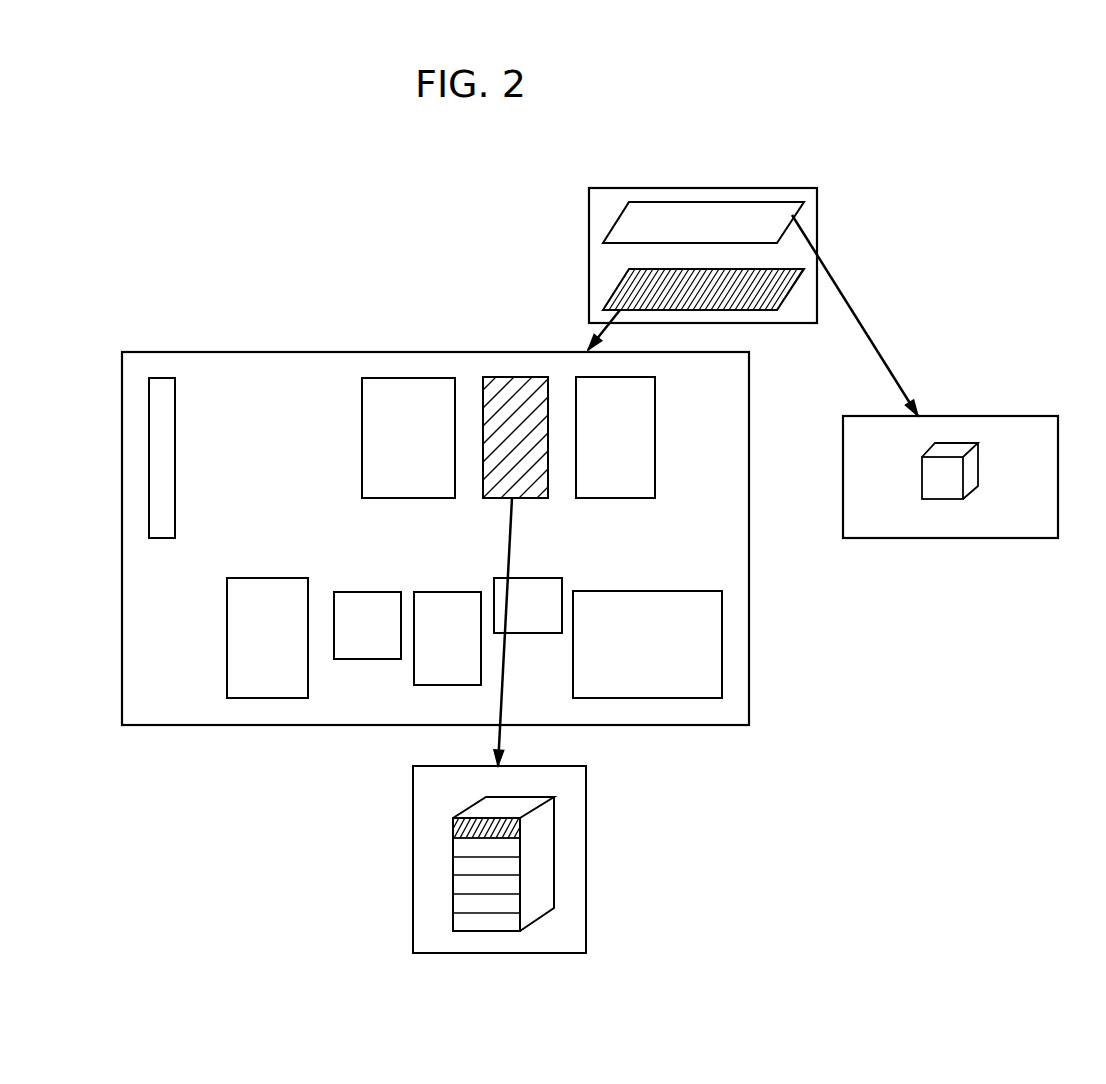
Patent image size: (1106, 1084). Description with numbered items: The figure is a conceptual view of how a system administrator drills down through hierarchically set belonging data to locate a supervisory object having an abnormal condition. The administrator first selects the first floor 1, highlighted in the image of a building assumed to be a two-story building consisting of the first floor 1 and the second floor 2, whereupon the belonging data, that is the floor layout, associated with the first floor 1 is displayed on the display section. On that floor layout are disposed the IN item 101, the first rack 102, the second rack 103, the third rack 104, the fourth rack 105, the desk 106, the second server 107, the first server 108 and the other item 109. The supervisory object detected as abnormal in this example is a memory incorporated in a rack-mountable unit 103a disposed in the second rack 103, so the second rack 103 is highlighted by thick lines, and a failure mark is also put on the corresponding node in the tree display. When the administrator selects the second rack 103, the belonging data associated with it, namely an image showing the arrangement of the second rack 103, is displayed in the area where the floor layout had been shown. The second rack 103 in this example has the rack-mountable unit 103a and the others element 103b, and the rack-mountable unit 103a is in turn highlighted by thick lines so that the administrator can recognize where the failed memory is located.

The Floor-1F 1 is at (211, 351).
The Floor-2F 2 is at (740, 202).
The IN 101 is at (149, 443).
The Rack-1 102 is at (362, 427).
The Rack-2 103 is at (510, 378).
The rack-mountable unit 103a is at (453, 826).
The Others03 103b is at (453, 848).
The Rack-3 104 is at (655, 433).
The Rack-4 105 is at (227, 638).
The Desk 106 is at (675, 591).
The Server-02 107 is at (365, 592).
The Server-01 108 is at (445, 592).
The Other02 109 is at (558, 578).